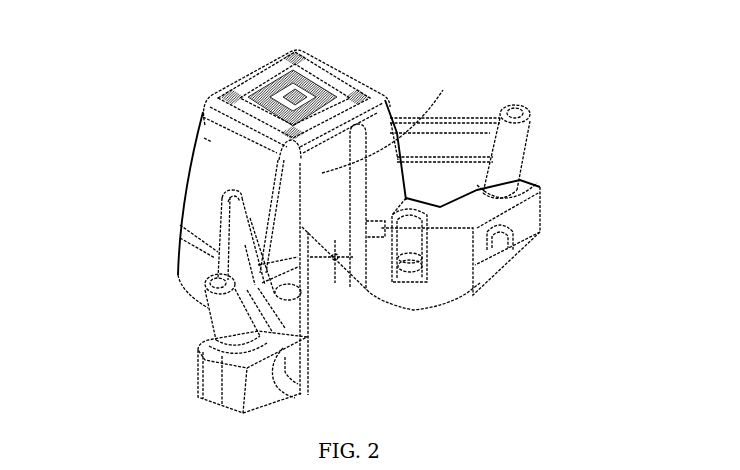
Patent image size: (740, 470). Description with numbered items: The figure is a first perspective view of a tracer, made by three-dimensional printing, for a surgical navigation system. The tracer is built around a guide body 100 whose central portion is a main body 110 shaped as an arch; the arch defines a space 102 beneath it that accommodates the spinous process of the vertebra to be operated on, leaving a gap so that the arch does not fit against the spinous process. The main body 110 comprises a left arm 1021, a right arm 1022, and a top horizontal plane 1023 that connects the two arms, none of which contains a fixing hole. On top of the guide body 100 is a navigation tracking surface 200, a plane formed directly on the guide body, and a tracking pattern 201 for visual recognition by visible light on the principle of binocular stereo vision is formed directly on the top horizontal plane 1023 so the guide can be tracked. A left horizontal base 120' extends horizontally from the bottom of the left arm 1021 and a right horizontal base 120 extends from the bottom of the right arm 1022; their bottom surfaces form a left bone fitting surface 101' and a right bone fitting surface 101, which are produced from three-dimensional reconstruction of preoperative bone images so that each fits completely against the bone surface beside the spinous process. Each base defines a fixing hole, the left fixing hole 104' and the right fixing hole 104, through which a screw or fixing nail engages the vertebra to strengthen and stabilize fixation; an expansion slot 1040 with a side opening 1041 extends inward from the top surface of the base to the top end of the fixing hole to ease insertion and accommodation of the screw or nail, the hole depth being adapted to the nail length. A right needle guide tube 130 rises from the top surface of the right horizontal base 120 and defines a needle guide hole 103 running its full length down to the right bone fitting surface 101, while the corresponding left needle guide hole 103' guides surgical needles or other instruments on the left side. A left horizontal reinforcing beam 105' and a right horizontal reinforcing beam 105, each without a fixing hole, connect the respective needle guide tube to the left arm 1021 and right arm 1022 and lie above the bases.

The guide body 100 is at (178, 172).
The left arm 1021 is at (210, 158).
The right arm 1022 is at (378, 120).
The top horizontal plane 1023 is at (225, 82).
The main body 110 is at (208, 142).
The navigation tracking surface 200 is at (317, 78).
The tracking pattern 201 is at (278, 77).
The space under the arch 102 is at (413, 121).
The right horizontal reinforcing beam 105 is at (467, 103).
The needle guide hole 103 is at (577, 102).
The right needle guide tube 130 is at (535, 142).
The right horizontal base 120 is at (507, 237).
The right bone fitting surface 101 is at (553, 258).
The expansion slot 1040 is at (428, 238).
The side opening 1041 is at (413, 262).
The right fixing hole 104 is at (450, 247).
The left fixing hole 104' is at (405, 314).
The left horizontal reinforcing beam 105' is at (191, 236).
The needle guide hole 103' is at (172, 283).
The left horizontal base 120' is at (213, 372).
The left bone fitting surface 101' is at (327, 386).